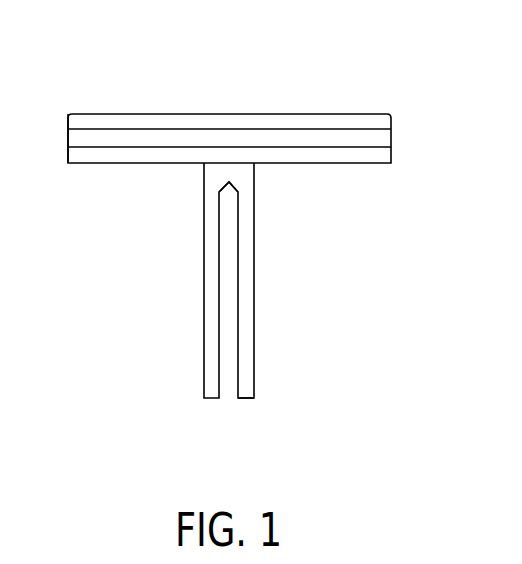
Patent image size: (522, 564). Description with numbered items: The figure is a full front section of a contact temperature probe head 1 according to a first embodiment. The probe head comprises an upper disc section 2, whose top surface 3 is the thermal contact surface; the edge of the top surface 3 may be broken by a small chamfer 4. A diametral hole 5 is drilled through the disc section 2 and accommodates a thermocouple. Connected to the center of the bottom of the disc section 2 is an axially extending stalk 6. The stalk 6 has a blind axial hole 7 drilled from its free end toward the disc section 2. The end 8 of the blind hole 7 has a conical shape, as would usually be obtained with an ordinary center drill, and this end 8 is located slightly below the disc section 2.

The contact temperature probe head 1 is at (309, 81).
The upper disc section 2 is at (376, 114).
The top surface 3 is at (152, 114).
The chamfer 4 is at (68, 114).
The diametral hole 5 is at (391, 147).
The stalk 6 is at (254, 258).
The blind axial hole 7 is at (236, 390).
The end of the blind hole 8 is at (232, 192).